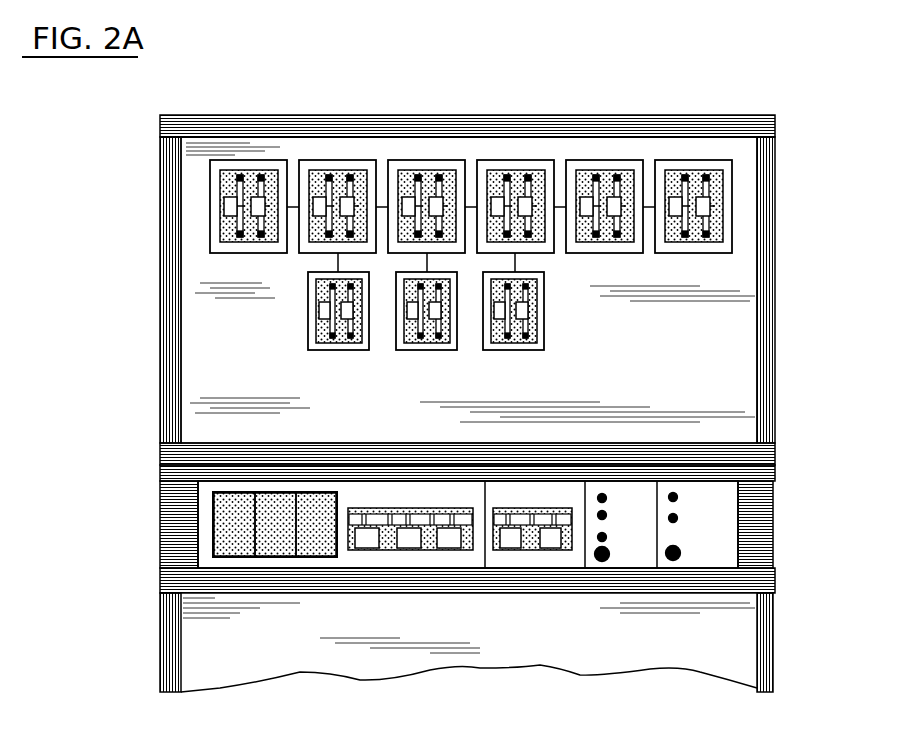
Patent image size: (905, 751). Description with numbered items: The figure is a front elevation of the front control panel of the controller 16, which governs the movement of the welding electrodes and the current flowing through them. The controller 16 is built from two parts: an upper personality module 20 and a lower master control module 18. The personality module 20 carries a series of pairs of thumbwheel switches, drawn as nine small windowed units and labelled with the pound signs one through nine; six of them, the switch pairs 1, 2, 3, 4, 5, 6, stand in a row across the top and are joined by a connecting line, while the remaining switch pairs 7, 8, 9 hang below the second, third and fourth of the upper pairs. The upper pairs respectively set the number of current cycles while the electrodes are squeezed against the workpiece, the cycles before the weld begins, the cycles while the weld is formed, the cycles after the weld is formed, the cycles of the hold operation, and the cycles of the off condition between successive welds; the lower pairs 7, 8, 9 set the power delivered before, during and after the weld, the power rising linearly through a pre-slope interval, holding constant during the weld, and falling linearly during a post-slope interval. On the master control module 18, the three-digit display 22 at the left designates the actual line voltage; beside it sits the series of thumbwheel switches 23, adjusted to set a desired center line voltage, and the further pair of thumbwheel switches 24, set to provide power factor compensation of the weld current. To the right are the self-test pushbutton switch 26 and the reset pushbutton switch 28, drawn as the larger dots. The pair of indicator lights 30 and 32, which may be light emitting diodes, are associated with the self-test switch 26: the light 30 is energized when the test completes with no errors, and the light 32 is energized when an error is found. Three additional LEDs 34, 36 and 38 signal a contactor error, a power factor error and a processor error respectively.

The controller 16 is at (596, 127).
The master control module 18 is at (212, 633).
The personality module 20 is at (197, 159).
The three-digit display 22 is at (213, 500).
The series of thumbwheel switches 23 is at (423, 550).
The pair of thumbwheel switches 24 is at (560, 550).
The self-test pushbutton switch 26 is at (679, 556).
The reset pushbutton switch 28 is at (601, 561).
The indicator light 30 is at (676, 494).
The indicator light 32 is at (677, 519).
The LED 34 is at (604, 494).
The LED 36 is at (606, 514).
The LED 38 is at (606, 536).
The thumbwheel switch pair 1 is at (220, 157).
The thumbwheel switch pair 2 is at (308, 160).
The thumbwheel switch pair 3 is at (392, 172).
The thumbwheel switch pair 4 is at (483, 172).
The thumbwheel switch pair 5 is at (627, 168).
The thumbwheel switch pair 6 is at (725, 168).
The thumbwheel switch pair 7 is at (311, 318).
The thumbwheel switch pair 8 is at (401, 318).
The thumbwheel switch pair 9 is at (505, 343).